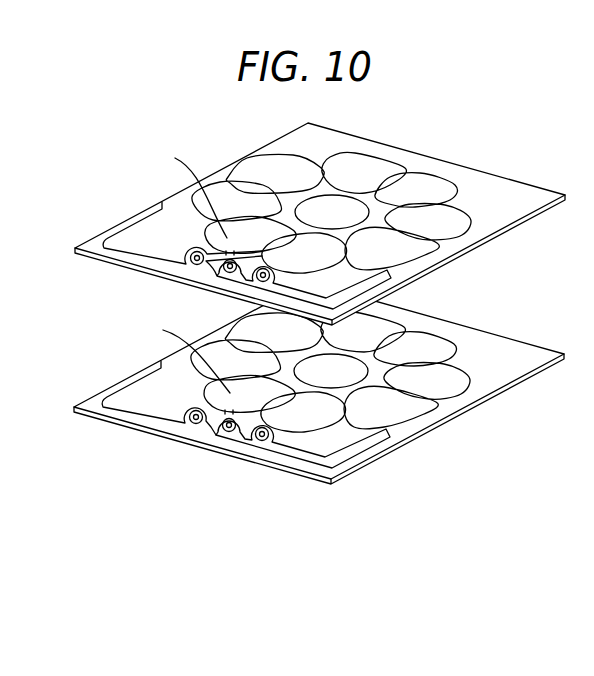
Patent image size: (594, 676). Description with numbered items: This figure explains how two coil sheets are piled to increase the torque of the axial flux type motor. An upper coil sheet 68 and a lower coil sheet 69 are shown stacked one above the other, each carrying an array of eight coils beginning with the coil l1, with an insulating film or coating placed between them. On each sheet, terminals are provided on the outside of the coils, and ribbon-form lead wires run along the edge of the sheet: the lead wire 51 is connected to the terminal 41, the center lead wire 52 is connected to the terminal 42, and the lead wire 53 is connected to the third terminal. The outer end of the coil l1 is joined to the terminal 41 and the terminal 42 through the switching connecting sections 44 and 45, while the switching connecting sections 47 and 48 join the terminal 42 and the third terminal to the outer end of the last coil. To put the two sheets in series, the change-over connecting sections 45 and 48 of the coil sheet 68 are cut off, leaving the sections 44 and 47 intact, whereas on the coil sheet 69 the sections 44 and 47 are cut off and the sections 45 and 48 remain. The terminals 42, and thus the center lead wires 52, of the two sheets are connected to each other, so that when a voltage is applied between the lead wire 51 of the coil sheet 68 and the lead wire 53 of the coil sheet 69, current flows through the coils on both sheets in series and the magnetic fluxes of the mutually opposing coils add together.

The coil sheet 68 is at (472, 168).
The coil sheet 69 is at (505, 335).
The lead wire 51 is at (120, 226).
The lead wire 52 is at (412, 283).
The lead wire 53 is at (366, 281).
The switching connecting section 44 is at (203, 252).
The switching connecting section 47 is at (277, 257).
The terminal 42 is at (215, 270).
The switching connecting section 48 is at (285, 442).
The terminal 41 is at (191, 411).
The switching connecting section 45 is at (214, 425).
The coil l1 is at (187, 268).